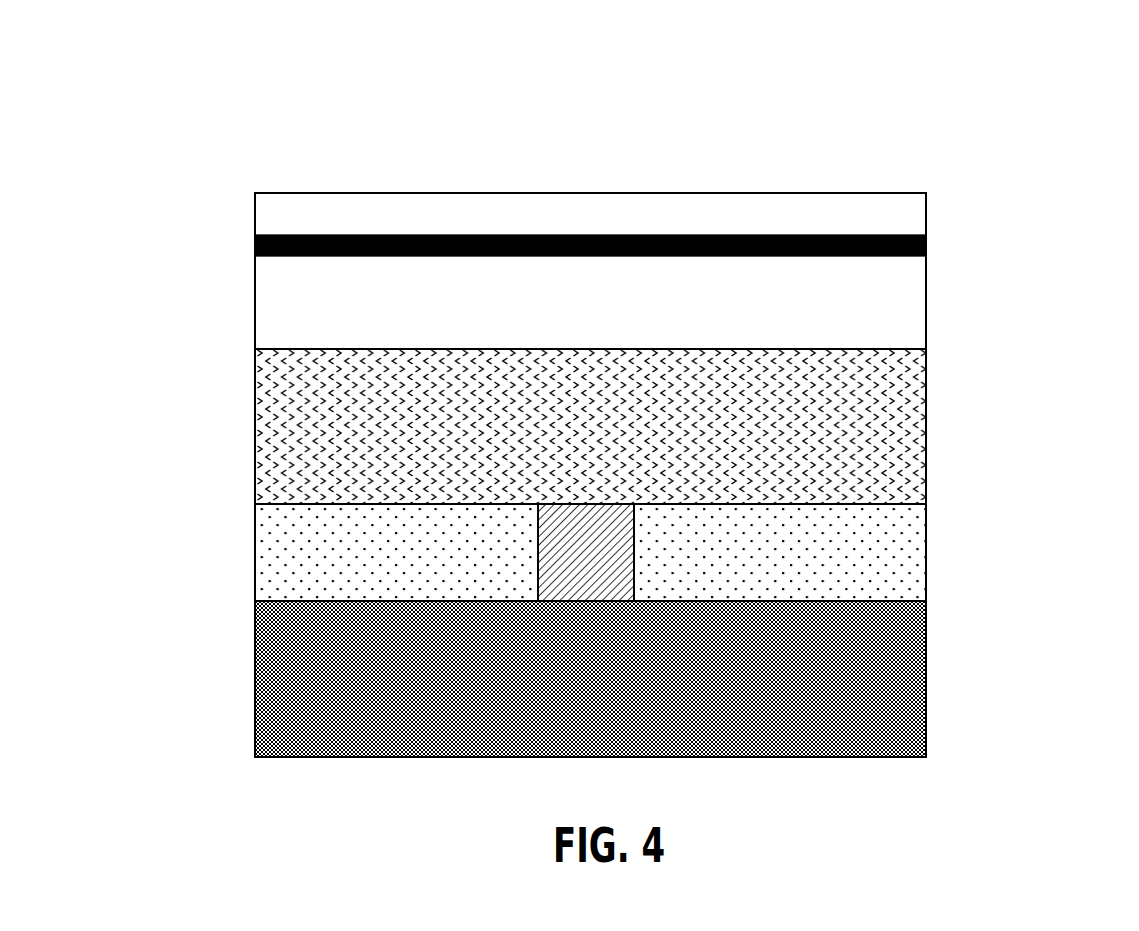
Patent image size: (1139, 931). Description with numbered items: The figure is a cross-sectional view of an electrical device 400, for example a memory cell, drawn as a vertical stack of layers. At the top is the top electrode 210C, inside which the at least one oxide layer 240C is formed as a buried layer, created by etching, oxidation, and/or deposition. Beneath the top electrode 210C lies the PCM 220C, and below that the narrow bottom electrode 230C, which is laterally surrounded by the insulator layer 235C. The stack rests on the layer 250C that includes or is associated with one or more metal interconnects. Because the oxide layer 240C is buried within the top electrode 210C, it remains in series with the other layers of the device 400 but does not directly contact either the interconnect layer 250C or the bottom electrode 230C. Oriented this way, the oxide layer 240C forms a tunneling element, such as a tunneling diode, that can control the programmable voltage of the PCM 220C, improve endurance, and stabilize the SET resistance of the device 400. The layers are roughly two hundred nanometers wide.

The electrical device 400 is at (127, 66).
The top electrode 210C is at (590, 271).
The PCM 220C is at (590, 426).
The bottom electrode 230C is at (586, 552).
The insulator layer 235C is at (926, 553).
The oxide layer 240C is at (926, 244).
The interconnect layer 250C is at (590, 679).